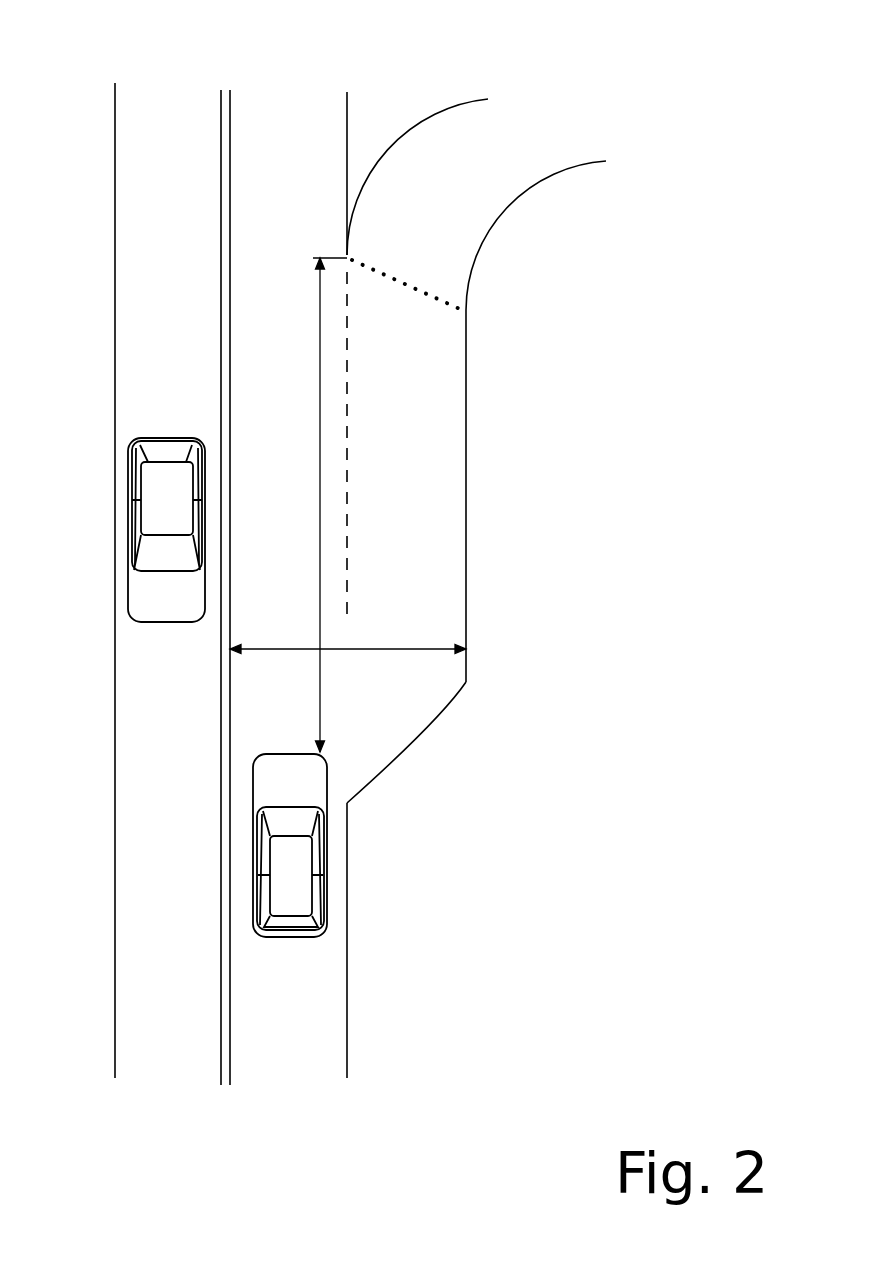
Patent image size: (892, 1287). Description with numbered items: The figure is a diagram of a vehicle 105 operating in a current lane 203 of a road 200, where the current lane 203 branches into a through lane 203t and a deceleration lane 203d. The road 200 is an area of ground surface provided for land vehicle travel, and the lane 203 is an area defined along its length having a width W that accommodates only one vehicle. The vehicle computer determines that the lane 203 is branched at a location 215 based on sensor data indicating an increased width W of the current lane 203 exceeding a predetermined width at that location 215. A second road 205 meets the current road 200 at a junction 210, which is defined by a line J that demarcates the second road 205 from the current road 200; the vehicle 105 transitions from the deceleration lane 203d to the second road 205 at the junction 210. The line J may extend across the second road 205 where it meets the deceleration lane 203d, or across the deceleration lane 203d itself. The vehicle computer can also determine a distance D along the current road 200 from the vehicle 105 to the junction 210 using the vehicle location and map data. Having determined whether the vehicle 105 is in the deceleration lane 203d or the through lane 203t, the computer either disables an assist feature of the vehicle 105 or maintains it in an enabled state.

The road 200 is at (347, 95).
The lane 203 is at (289, 1011).
The through lane 203t is at (296, 233).
The deceleration lane 203d is at (400, 445).
The second road 205 is at (524, 225).
The junction 210 is at (427, 272).
The location 215 is at (353, 808).
The vehicle 105 is at (327, 843).
The distance D is at (320, 490).
The width W is at (442, 650).
The line J is at (468, 309).